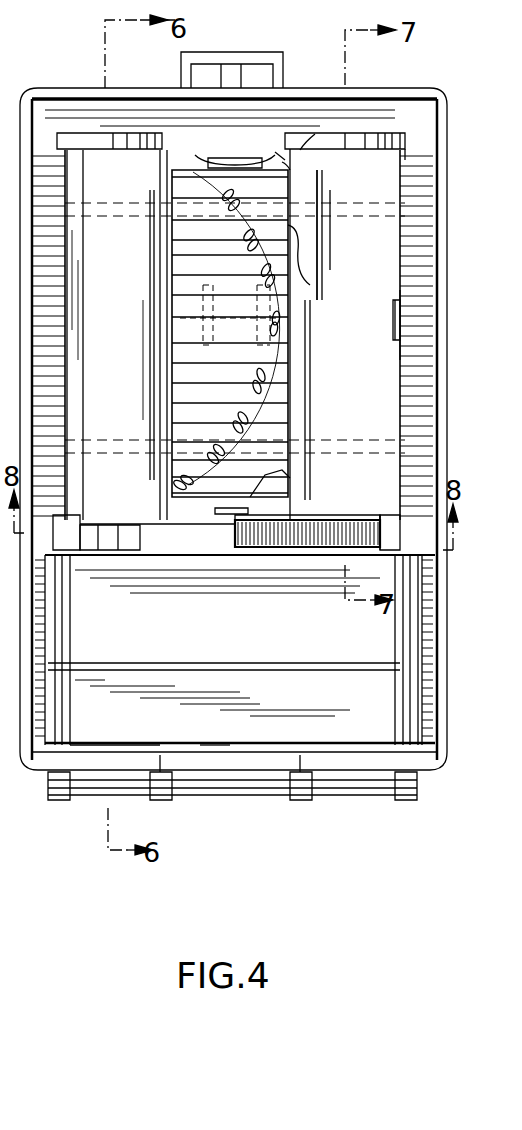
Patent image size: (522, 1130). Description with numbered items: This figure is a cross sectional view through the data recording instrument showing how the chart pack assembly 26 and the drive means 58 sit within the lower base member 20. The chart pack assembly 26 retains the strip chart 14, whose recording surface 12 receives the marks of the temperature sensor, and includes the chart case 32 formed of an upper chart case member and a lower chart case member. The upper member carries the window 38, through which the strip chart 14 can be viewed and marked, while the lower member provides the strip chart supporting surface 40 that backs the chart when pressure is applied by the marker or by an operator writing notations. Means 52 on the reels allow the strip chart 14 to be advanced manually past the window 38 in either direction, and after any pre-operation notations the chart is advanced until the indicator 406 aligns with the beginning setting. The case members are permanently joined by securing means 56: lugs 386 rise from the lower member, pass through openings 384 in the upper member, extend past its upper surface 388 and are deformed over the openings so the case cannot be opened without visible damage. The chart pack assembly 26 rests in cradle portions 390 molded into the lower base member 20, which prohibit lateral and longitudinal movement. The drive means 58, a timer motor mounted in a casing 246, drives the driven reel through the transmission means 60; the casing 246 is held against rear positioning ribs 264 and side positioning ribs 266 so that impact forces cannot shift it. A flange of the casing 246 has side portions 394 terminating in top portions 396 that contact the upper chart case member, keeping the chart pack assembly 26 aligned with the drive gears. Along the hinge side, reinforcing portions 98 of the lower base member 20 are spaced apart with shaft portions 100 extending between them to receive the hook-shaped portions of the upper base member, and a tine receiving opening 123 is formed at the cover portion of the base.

The lower base member 20 is at (440, 775).
The tine receiving opening 123 is at (258, 62).
The manual advancing means 52 is at (86, 133).
The indicator 406 is at (335, 127).
The chart pack assembly 26 is at (395, 160).
The recording surface 12 is at (290, 168).
The strip chart 14 is at (323, 178).
The openings 384 is at (208, 158).
The lugs 386 is at (250, 158).
The securing means 56 is at (238, 570).
The cradle portion 390 is at (80, 212).
The upper surface 388 is at (349, 235).
The window 38 is at (316, 262).
The chart case 32 is at (400, 405).
The strip chart supporting surface 40 is at (275, 475).
The side portions 394 is at (50, 518).
The top portions 396 is at (75, 527).
The transmission means 60 is at (352, 548).
The side positioning ribs 266 is at (60, 690).
The drive means 58 is at (330, 798).
The reinforcing portions 98 is at (60, 803).
The rear positioning ribs 264 is at (128, 790).
The shaft portions 100 is at (205, 800).
The casing 246 is at (100, 725).